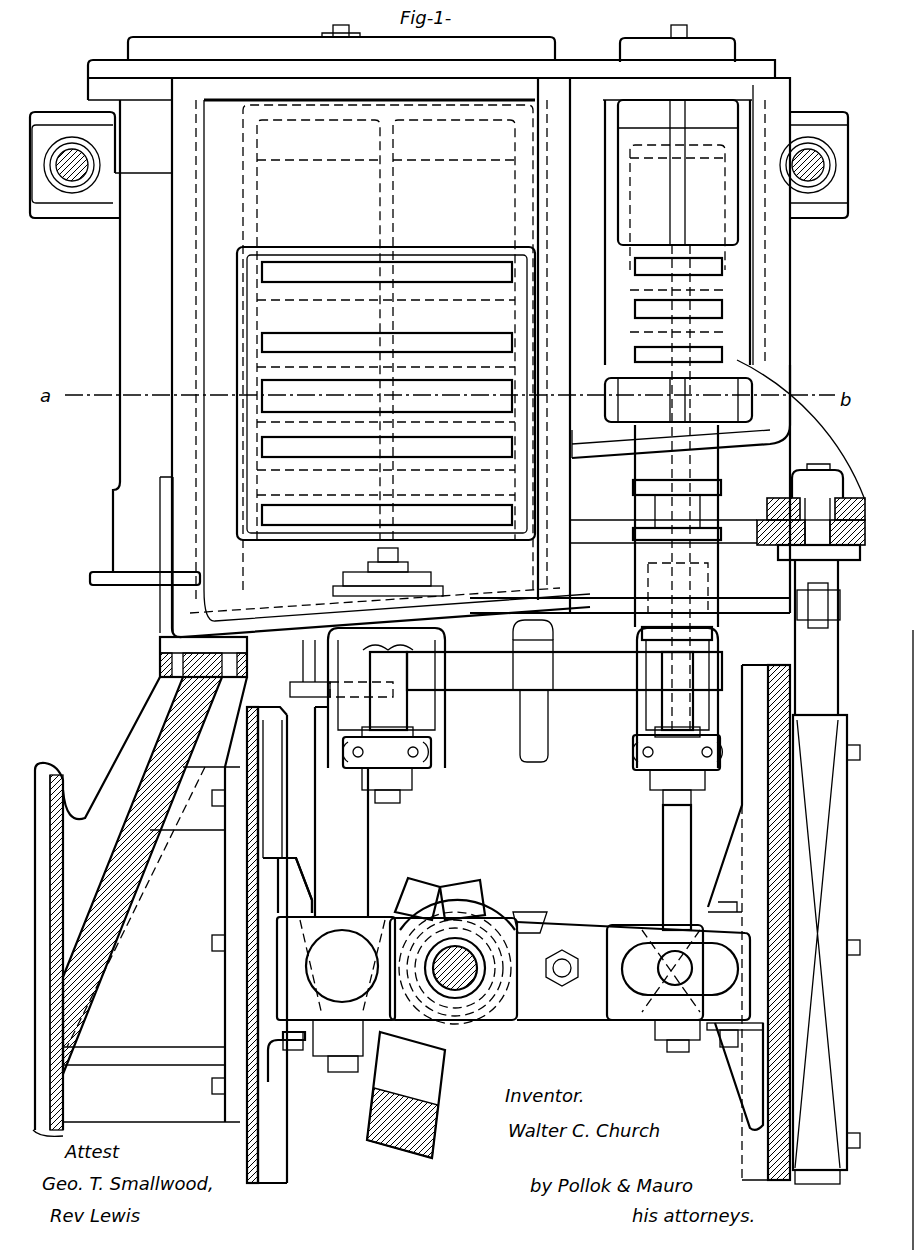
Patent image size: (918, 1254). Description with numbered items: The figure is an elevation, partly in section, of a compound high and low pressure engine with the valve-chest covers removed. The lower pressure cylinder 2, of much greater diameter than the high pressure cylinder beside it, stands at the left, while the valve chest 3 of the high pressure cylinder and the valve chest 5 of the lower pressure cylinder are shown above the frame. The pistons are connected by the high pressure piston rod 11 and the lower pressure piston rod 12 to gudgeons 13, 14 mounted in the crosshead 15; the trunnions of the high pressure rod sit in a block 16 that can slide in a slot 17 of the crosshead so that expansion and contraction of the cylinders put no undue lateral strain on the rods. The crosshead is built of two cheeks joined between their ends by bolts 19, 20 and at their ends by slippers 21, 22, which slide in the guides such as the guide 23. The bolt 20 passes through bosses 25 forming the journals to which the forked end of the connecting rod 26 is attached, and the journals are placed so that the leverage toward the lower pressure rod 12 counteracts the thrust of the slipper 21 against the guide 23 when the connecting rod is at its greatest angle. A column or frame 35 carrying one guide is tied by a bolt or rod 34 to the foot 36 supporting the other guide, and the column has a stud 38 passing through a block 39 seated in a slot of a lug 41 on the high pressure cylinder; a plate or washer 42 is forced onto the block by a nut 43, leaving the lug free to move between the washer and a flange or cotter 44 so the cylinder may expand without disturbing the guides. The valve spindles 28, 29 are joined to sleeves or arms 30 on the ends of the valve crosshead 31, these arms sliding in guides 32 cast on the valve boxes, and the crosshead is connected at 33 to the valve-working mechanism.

The lower pressure cylinder 2 is at (135, 298).
The high pressure valve chest 3 is at (737, 232).
The lower pressure valve chest 5 is at (220, 243).
The high pressure piston rod 11 is at (680, 828).
The lower pressure piston rod 12 is at (352, 850).
The gudgeon 13 is at (668, 948).
The gudgeon 14 is at (339, 930).
The crosshead 15 is at (562, 930).
The block 16 is at (680, 969).
The slot 17 is at (645, 985).
The bolt 19 is at (562, 980).
The bolt 20 is at (462, 992).
The slipper 21 is at (288, 1068).
The slipper 22 is at (755, 1073).
The guide 23 is at (277, 813).
The boss 25 is at (452, 940).
The connecting rod 26 is at (406, 1095).
The valve spindle 28 is at (680, 212).
The valve spindle 29 is at (385, 548).
The sleeve or arm 30 is at (392, 706).
The valve crosshead 31 is at (564, 671).
The guide 32 is at (398, 760).
The connection point 33 is at (533, 668).
The bolt or rod 34 is at (601, 606).
The column or frame 35 is at (826, 872).
The foot 36 is at (228, 643).
The stud 38 is at (817, 531).
The block 39 is at (805, 548).
The lug or bracket 41 is at (765, 545).
The plate or washer 42 is at (778, 498).
The nut 43 is at (817, 504).
The flange or cotter 44 is at (819, 552).